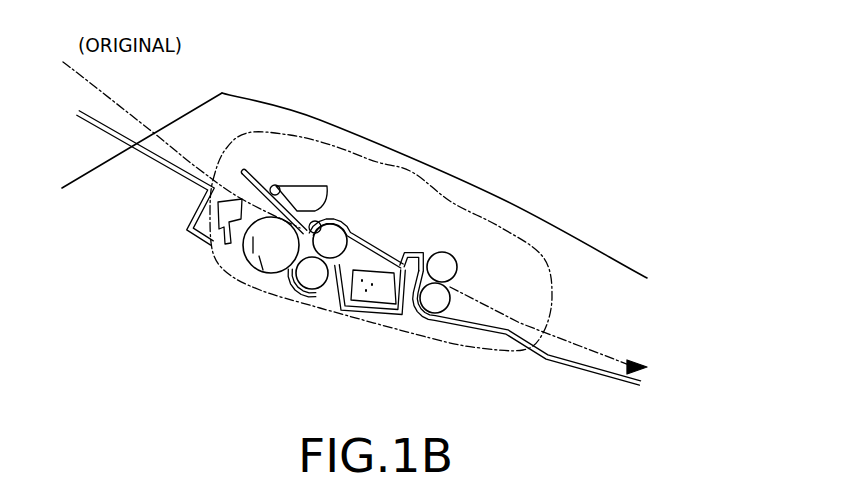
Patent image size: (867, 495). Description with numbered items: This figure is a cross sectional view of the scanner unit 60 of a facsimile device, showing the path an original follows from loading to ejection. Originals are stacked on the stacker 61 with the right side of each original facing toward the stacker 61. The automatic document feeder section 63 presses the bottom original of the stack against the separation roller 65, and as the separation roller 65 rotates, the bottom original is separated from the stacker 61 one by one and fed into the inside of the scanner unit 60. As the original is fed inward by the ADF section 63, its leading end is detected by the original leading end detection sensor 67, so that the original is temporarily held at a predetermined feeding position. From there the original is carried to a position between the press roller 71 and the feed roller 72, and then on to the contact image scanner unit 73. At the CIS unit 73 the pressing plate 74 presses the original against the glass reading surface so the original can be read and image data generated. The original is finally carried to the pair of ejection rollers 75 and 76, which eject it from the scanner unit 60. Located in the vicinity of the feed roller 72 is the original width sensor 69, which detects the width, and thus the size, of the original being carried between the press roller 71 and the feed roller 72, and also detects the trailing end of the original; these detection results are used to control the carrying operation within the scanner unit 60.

The scanner unit 60 is at (413, 165).
The stacker 61 is at (172, 173).
The automatic document feeder (ADF) section 63 is at (254, 176).
The separation roller 65 is at (255, 266).
The original leading end detection sensor 67 is at (303, 198).
The original width sensor 69 is at (363, 228).
The press roller 71 is at (313, 282).
The feed roller 72 is at (343, 208).
The contact image scanner (CIS) unit 73 is at (372, 296).
The pressing plate 74 is at (390, 258).
The ejection roller 75 is at (438, 305).
The ejection roller 76 is at (457, 271).